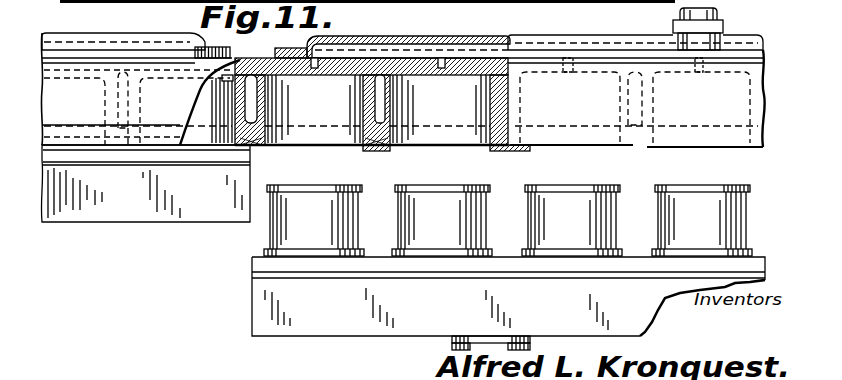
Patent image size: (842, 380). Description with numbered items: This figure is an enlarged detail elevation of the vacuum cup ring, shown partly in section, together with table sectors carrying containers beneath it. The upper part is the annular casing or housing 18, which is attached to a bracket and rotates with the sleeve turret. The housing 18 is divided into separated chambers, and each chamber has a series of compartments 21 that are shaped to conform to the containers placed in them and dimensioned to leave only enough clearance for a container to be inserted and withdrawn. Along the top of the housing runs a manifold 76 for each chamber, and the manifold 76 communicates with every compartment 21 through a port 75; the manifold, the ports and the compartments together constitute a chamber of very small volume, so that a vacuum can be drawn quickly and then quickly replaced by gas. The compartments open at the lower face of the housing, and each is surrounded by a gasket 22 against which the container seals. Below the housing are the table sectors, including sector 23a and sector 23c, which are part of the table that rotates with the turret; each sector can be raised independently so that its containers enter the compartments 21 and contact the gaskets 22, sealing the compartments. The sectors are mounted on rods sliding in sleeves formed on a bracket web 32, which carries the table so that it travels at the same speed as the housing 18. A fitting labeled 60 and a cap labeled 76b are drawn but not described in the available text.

The casing or housing 18 is at (763, 66).
The compartments 21 is at (323, 118).
The gasket 22 is at (370, 146).
The table sector 23a is at (328, 311).
The table sector 23c is at (122, 205).
The bracket web 32 is at (450, 346).
The fitting 60 is at (723, 25).
The port 75 is at (315, 70).
The manifold 76 is at (468, 37).
The cap 76b is at (101, 44).